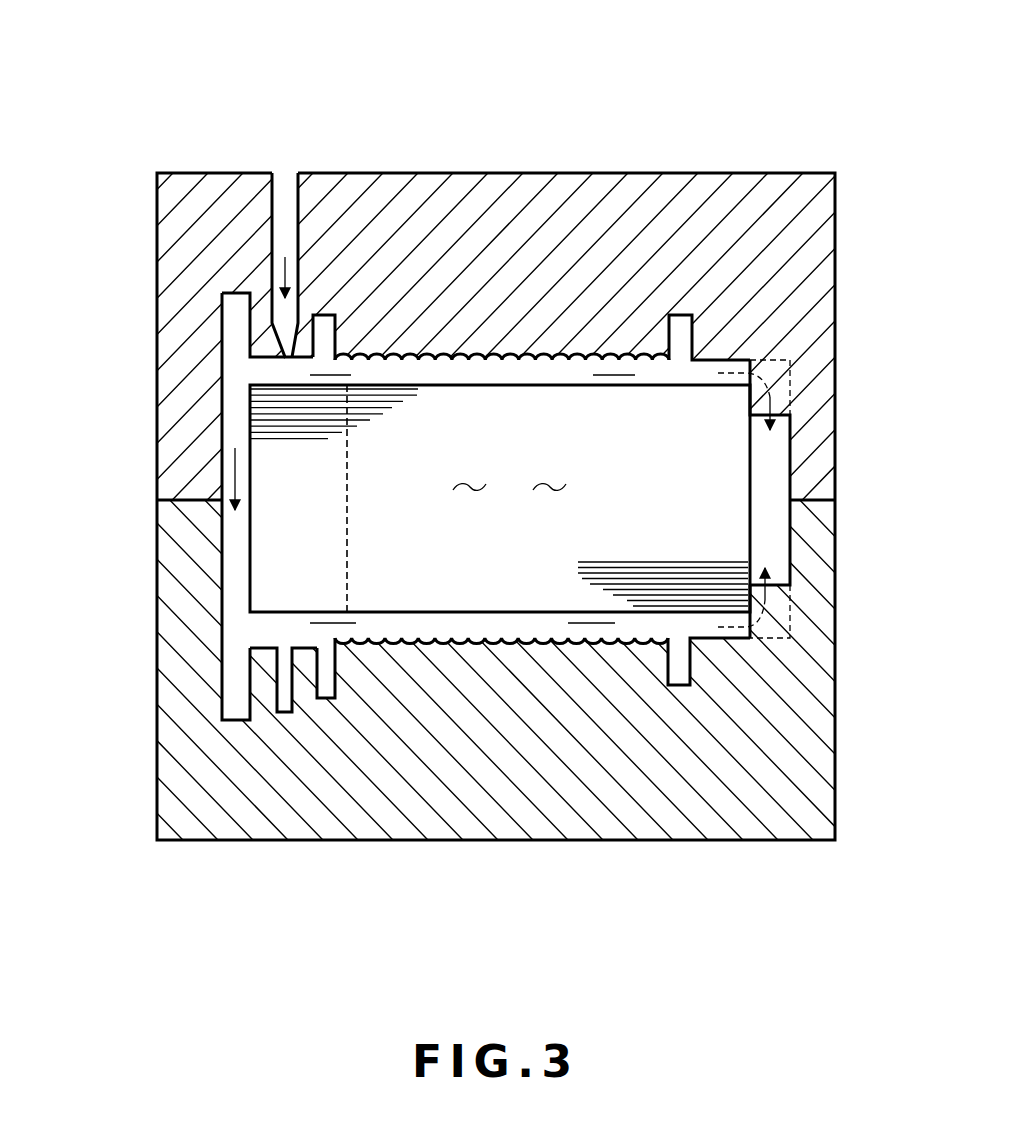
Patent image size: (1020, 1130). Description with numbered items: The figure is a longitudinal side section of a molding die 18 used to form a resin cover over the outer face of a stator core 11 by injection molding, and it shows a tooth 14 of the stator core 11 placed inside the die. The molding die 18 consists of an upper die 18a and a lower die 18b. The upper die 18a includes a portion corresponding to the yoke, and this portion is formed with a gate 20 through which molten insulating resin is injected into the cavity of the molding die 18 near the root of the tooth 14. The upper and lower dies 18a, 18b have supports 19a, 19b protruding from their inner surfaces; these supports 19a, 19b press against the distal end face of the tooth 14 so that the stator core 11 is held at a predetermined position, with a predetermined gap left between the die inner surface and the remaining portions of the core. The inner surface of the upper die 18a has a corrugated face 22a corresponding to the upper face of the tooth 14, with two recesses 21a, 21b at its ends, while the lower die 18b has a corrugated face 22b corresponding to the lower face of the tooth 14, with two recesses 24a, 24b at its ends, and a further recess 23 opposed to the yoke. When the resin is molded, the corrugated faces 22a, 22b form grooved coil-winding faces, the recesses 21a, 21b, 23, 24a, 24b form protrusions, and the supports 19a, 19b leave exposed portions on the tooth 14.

The stator core 11 is at (428, 506).
The tooth 14 is at (487, 385).
The molding die 18 is at (568, 172).
The upper die 18a is at (175, 331).
The lower die 18b is at (175, 708).
The support 19a is at (744, 403).
The support 19b is at (747, 597).
The gate 20 is at (287, 185).
The recess 21a is at (322, 316).
The recess 21b is at (672, 332).
The corrugated face 22a is at (568, 362).
The corrugated face 22b is at (500, 632).
The recess 23 is at (283, 670).
The recess 24a is at (323, 687).
The recess 24b is at (680, 673).